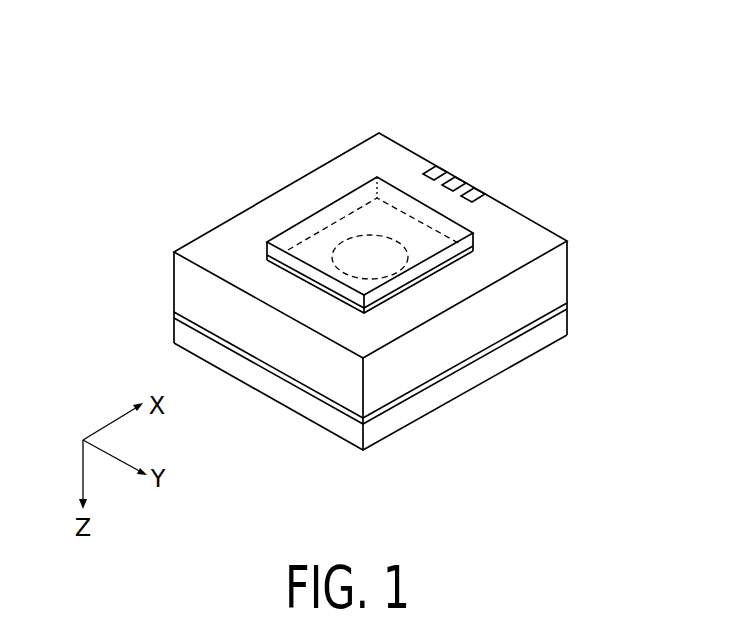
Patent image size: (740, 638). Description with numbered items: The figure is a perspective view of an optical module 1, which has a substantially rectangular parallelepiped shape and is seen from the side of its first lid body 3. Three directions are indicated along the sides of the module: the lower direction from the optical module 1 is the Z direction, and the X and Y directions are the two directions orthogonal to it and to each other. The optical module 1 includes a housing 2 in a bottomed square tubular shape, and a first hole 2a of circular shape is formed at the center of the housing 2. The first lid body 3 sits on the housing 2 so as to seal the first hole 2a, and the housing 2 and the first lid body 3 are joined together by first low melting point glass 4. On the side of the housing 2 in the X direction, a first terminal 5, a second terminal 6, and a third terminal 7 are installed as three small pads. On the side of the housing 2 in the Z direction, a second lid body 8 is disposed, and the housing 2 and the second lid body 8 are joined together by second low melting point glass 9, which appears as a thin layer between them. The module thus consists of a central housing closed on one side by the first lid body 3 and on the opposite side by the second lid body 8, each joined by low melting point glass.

The optical module 1 is at (547, 65).
The housing 2 is at (568, 275).
The first hole 2a is at (338, 270).
The first lid body 3 is at (308, 217).
The first low melting point glass 4 is at (450, 268).
The first terminal 5 is at (478, 192).
The second terminal 6 is at (458, 182).
The third terminal 7 is at (438, 172).
The second lid body 8 is at (568, 320).
The second low melting point glass 9 is at (568, 306).